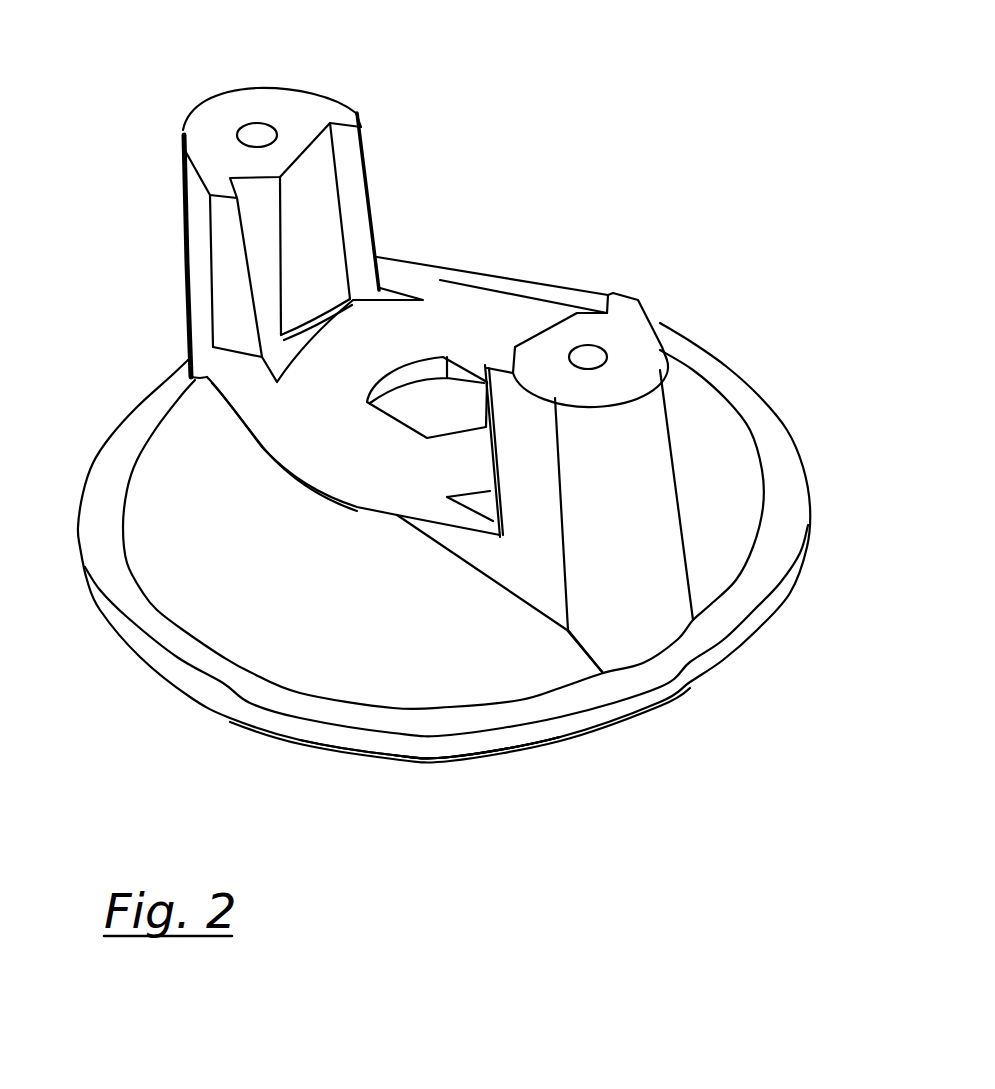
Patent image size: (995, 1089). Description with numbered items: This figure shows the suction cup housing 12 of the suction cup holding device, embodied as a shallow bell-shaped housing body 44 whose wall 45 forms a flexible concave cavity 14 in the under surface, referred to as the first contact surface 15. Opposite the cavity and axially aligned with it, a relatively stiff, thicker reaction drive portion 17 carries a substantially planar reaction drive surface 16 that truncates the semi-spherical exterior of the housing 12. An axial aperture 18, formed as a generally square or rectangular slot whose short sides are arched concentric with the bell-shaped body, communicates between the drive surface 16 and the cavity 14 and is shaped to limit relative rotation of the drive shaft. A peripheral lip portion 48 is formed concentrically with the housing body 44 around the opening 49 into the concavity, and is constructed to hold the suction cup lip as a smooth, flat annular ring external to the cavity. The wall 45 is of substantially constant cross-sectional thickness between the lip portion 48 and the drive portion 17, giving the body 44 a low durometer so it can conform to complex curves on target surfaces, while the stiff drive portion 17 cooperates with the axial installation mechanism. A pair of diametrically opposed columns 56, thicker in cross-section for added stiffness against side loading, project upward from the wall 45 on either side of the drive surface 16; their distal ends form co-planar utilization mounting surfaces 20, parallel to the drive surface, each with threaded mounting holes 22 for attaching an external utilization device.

The housing 12 is at (690, 231).
The concave cavity 14 is at (571, 774).
The first contact surface 15 is at (443, 760).
The reaction drive surface 16 is at (339, 428).
The reaction drive portion 17 is at (397, 515).
The axial aperture 18 is at (455, 420).
The utilization mounting surface 20 is at (197, 118).
The threaded mounting holes 22 is at (272, 124).
The bell-shaped housing body 44 is at (195, 510).
The wall 45 is at (730, 470).
The peripheral lip portion 48 is at (757, 583).
The opening 49 is at (475, 760).
The columns 56 is at (183, 262).